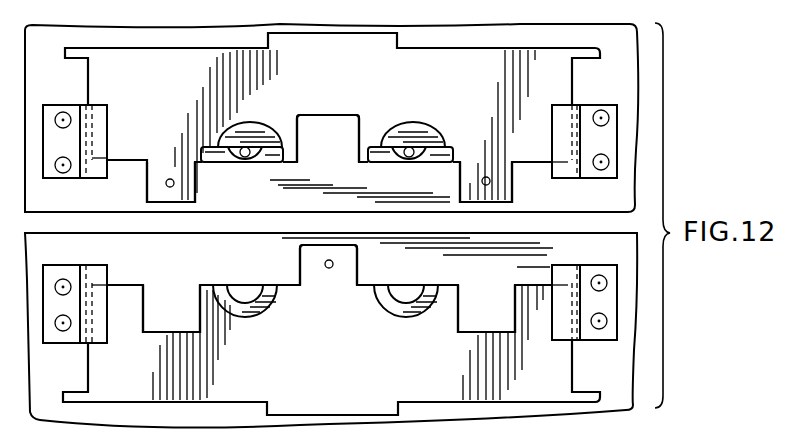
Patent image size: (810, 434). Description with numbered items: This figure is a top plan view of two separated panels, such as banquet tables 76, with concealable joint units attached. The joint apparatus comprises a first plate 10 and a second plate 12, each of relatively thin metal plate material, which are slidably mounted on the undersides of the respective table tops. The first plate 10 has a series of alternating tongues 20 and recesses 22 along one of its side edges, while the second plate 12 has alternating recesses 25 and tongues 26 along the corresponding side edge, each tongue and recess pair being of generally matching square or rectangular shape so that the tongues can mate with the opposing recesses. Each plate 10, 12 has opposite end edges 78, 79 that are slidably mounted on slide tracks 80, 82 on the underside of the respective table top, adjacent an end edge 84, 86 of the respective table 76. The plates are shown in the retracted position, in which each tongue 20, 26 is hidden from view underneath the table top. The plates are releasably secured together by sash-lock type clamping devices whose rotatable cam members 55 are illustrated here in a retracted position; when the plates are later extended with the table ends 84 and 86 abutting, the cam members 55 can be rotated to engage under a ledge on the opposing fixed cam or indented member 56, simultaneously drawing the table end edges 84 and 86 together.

The first plate 10 is at (478, 53).
The second plate 12 is at (232, 393).
The tongue 20 is at (155, 188).
The recess 22 is at (317, 117).
The recess 25 is at (152, 332).
The tongue 26 is at (315, 258).
The rotatable cam member 55 is at (400, 130).
The fixed cam or indented member 56 is at (385, 303).
The banquet table 76 is at (610, 42).
The end edge of plate 78 is at (88, 78).
The end edge of plate 79 is at (573, 80).
The slide track 80 is at (98, 118).
The slide track 82 is at (563, 107).
The end edge of table 84 is at (184, 211).
The end edge of table 86 is at (211, 233).